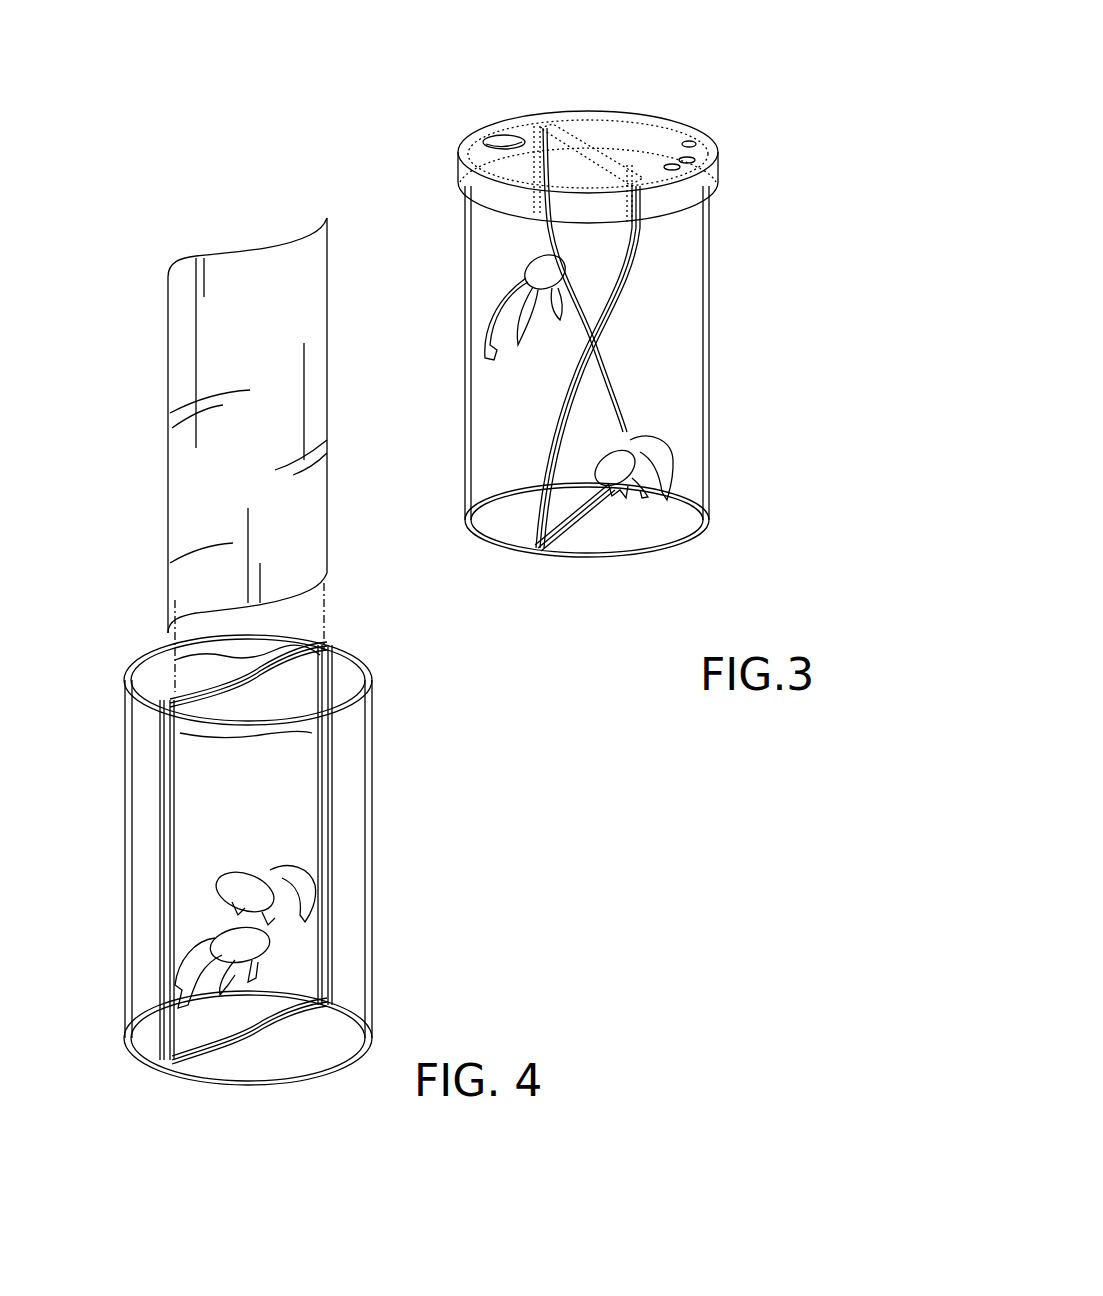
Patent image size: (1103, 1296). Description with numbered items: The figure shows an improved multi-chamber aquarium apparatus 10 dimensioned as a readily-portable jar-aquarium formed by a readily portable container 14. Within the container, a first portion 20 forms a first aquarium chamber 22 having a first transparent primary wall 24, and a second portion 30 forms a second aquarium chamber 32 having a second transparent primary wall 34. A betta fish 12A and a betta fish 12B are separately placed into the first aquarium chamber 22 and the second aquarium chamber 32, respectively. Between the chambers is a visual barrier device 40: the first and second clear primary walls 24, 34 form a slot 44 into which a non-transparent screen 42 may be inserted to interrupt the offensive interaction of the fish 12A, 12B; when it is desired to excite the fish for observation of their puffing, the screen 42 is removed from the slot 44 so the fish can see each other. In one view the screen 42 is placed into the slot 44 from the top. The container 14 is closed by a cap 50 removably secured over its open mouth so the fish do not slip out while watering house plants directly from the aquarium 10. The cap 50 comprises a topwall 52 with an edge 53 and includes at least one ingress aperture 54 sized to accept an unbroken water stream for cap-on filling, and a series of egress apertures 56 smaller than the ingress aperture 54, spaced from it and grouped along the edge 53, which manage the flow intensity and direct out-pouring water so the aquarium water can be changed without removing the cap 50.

In FIG. 3, the multi-chamber aquarium apparatus 10 is at (406, 49).
In FIG. 4, the multi-chamber aquarium apparatus 10 is at (451, 887).
In FIG. 3, the betta fish 12A is at (468, 304).
In FIG. 4, the betta fish 12A is at (255, 1034).
In FIG. 3, the betta fish 12B is at (704, 448).
In FIG. 4, the betta fish 12B is at (342, 929).
In FIG. 3, the readily portable container 14 is at (634, 371).
In FIG. 4, the readily portable container 14 is at (123, 797).
In FIG. 3, the first portion 20 is at (503, 390).
In FIG. 4, the first portion 20 is at (138, 897).
In FIG. 3, the first aquarium chamber 22 is at (448, 466).
In FIG. 4, the first aquarium chamber 22 is at (111, 657).
In FIG. 3, the first transparent primary wall 24 is at (540, 517).
In FIG. 4, the first transparent primary wall 24 is at (160, 933).
In FIG. 3, the second portion 30 is at (757, 325).
In FIG. 4, the second portion 30 is at (410, 834).
In FIG. 3, the second aquarium chamber 32 is at (705, 499).
In FIG. 4, the second aquarium chamber 32 is at (369, 660).
In FIG. 3, the second transparent primary wall 34 is at (718, 564).
In FIG. 4, the second transparent primary wall 34 is at (322, 799).
In FIG. 3, the visual barrier device 40 is at (588, 338).
In FIG. 4, the visual barrier device 40 is at (188, 687).
In FIG. 4, the non-transparent screen 42 is at (199, 425).
In FIG. 3, the slot 44 is at (601, 539).
In FIG. 4, the slot 44 is at (119, 1089).
In FIG. 3, the cap 50 is at (642, 167).
In FIG. 3, the topwall 52 is at (618, 104).
In FIG. 3, the edge 53 is at (720, 74).
In FIG. 3, the ingress aperture 54 is at (537, 88).
In FIG. 3, the egress apertures 56 is at (688, 158).